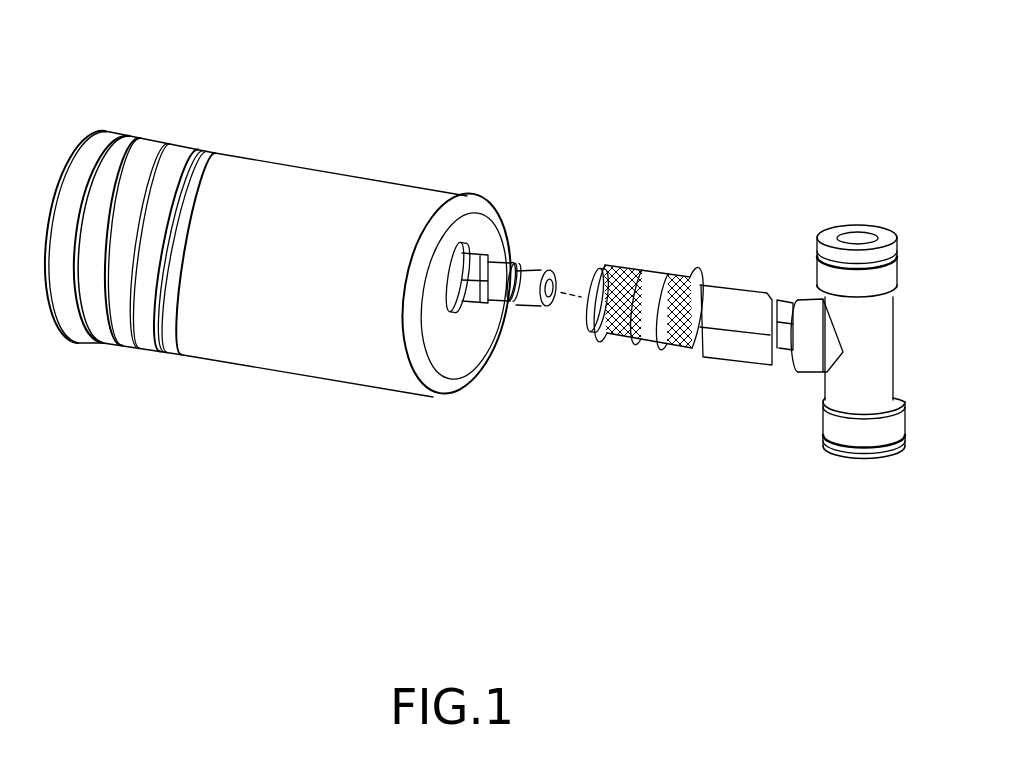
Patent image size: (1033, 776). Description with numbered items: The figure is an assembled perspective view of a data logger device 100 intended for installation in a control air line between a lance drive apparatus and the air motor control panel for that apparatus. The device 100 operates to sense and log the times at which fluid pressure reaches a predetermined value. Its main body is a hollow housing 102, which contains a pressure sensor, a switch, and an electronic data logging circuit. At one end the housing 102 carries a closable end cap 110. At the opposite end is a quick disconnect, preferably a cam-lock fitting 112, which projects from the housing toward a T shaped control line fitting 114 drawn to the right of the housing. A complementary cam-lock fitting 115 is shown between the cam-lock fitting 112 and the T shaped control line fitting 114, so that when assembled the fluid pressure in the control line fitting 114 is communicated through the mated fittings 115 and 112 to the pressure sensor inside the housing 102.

The data logger device 100 is at (512, 166).
The hollow housing 102 is at (370, 160).
The closable end cap 110 is at (155, 135).
The cam-lock fitting 112 is at (516, 267).
The T shaped control line fitting 114 is at (896, 247).
The complementary cam-lock fitting 115 is at (733, 265).